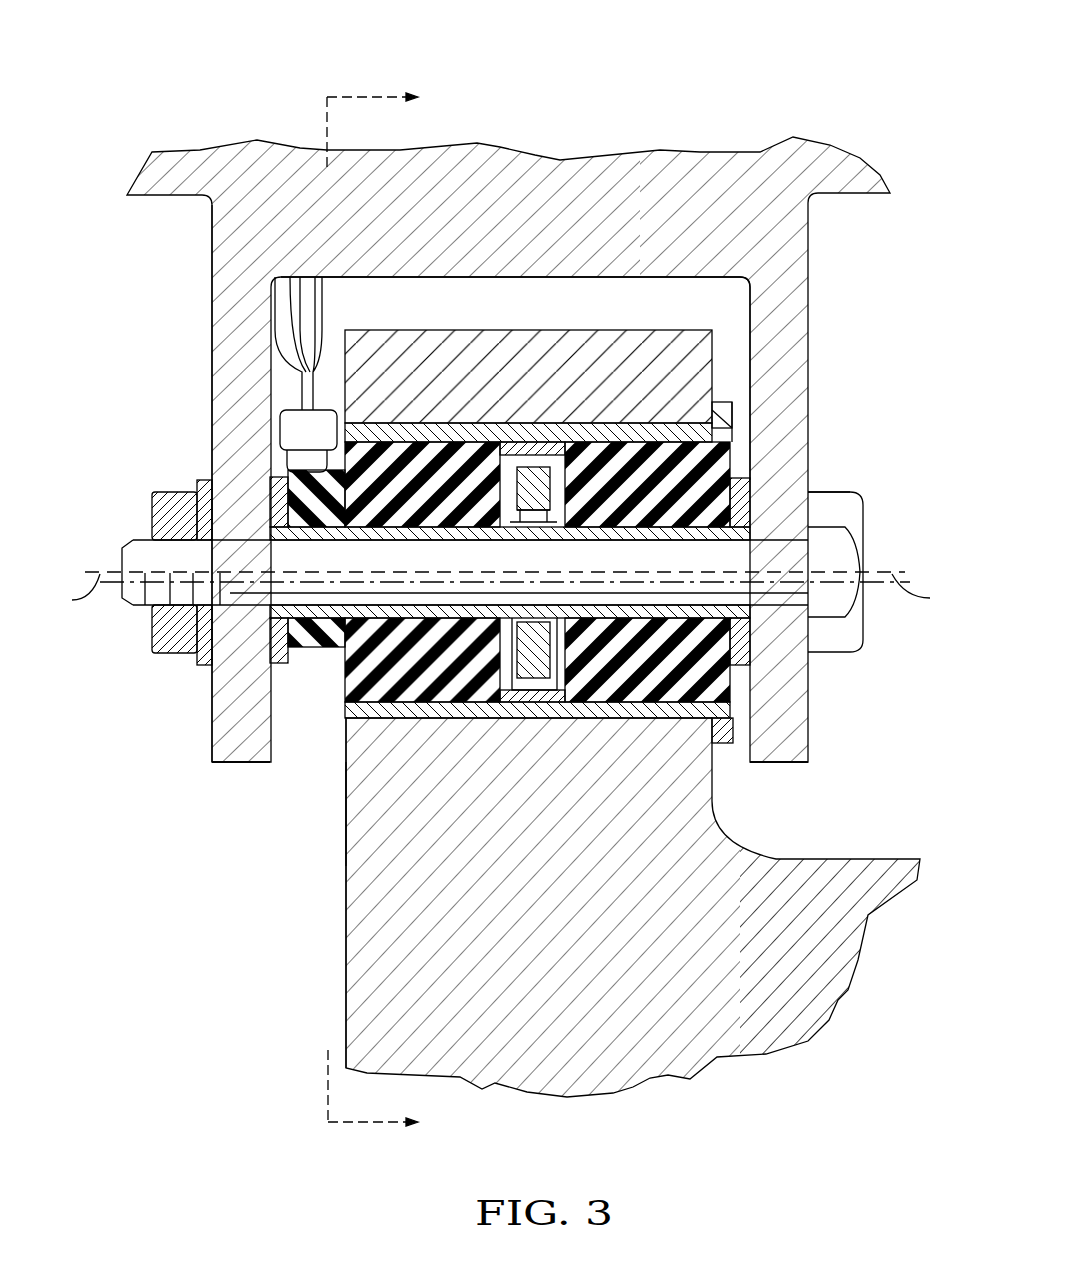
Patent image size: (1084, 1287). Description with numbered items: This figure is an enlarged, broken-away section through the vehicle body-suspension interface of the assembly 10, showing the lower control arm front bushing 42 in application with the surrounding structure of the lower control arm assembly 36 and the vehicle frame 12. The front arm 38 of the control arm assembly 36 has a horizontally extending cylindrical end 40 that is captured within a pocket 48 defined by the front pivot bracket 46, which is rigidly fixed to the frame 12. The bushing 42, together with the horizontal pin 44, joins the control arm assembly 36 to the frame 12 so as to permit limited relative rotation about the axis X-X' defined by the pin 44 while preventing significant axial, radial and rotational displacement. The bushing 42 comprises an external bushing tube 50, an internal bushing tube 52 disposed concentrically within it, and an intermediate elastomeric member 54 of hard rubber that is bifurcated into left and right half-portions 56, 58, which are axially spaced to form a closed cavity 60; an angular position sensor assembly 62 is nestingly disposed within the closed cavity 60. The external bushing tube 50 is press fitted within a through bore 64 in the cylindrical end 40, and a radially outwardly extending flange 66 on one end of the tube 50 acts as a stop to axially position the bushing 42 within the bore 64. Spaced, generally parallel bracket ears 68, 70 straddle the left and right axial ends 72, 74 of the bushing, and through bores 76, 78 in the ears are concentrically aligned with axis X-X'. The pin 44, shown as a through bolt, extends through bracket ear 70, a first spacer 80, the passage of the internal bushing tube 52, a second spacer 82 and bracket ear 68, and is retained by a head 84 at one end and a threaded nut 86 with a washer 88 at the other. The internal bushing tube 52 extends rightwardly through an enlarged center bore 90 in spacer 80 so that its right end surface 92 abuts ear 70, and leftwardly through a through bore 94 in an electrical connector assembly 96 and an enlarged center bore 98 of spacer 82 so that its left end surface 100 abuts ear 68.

The brake assembly 10 is at (150, 113).
The frame 12 is at (530, 155).
The lower control arm assembly 36 is at (340, 1012).
The front arm 38 is at (665, 785).
The cylindrical end 40 is at (632, 335).
The lower control arm front bushing 42 is at (342, 708).
The horizontal pin 44 is at (812, 496).
The front pivot bracket 46 is at (218, 755).
The pocket 48 is at (745, 330).
The external bushing tube 50 is at (355, 452).
The internal bushing tube 52 is at (760, 532).
The elastomeric member 54 is at (320, 450).
The left half-portion 56 is at (520, 700).
The right half-portion 58 is at (720, 688).
The closed cavity 60 is at (512, 657).
The angular position sensor assembly 62 is at (548, 712).
The through bore 64 is at (740, 444).
The flange 66 is at (728, 738).
The bracket ear 68 is at (240, 770).
The bracket ear 70 is at (808, 758).
The left axial end 72 is at (345, 668).
The right axial end 74 is at (734, 412).
The through bore 76 is at (188, 548).
The through bore 78 is at (800, 596).
The first spacer 80 is at (738, 648).
The second spacer 82 is at (240, 700).
The head 84 is at (852, 512).
The threaded nut 86 is at (178, 500).
The washer 88 is at (205, 492).
The enlarged center bore 90 is at (785, 548).
The right end surface 92 is at (745, 608).
The through bore 94 is at (278, 495).
The electrical connector assembly 96 is at (293, 470).
The enlarged center bore 98 is at (190, 600).
The left end surface 100 is at (275, 650).